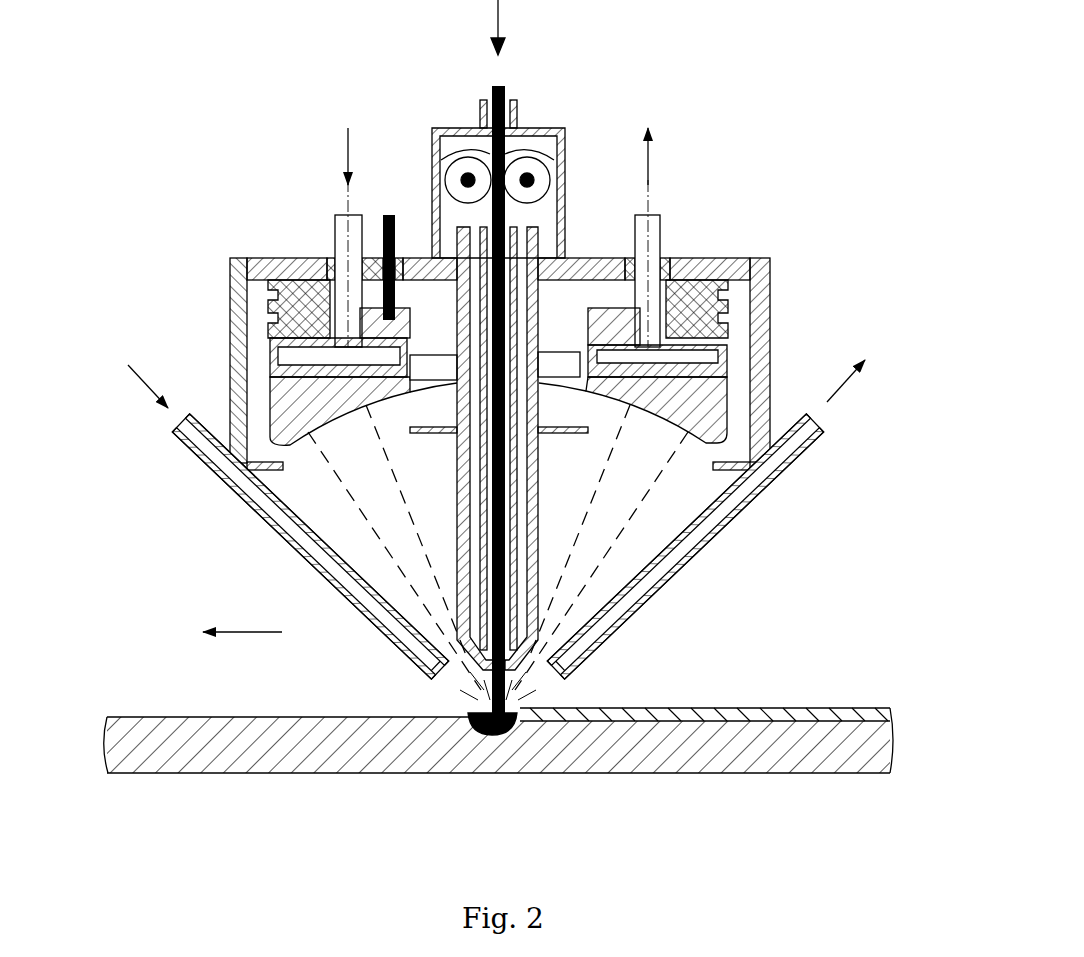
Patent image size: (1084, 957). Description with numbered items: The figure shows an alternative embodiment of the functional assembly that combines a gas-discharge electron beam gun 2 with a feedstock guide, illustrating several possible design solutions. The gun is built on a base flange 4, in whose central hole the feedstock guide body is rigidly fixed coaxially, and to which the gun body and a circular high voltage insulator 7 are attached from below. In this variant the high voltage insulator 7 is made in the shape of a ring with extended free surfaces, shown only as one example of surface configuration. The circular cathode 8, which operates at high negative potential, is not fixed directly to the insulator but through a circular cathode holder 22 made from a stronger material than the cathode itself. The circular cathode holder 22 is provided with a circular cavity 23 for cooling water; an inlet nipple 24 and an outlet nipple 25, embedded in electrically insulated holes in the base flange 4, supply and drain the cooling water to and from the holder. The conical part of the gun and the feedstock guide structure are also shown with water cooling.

The gas-discharge electron beam gun 2 is at (228, 286).
The base flange 4 is at (263, 260).
The high voltage insulator 7 is at (615, 332).
The circular cathode 8 is at (292, 408).
The circular cathode holder 22 is at (713, 323).
The circular cavity 23 is at (292, 354).
The inlet nipple 24 is at (332, 227).
The outlet nipple 25 is at (662, 235).